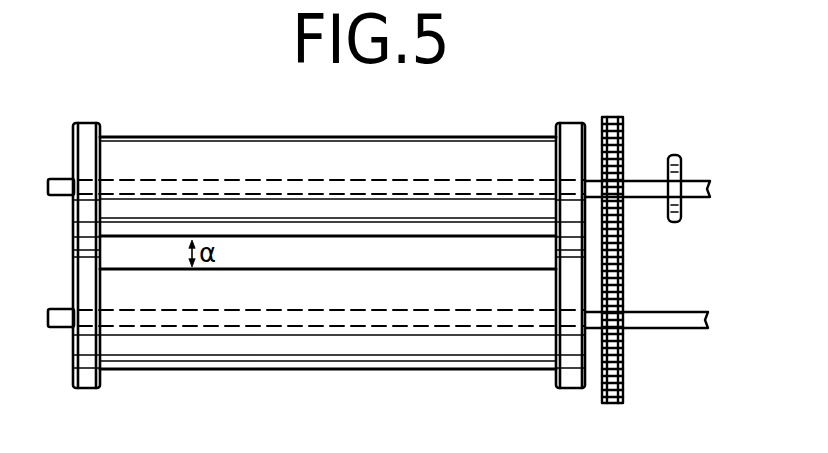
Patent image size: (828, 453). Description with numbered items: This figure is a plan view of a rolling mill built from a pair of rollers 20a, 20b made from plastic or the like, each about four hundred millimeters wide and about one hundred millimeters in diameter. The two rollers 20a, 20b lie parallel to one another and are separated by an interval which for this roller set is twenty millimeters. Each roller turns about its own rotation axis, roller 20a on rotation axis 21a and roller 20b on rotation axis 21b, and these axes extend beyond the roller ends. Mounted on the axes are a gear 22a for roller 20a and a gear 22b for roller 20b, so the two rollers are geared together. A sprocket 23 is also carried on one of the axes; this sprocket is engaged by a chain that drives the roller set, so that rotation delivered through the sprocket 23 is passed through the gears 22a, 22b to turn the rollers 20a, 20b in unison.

The roller 20a is at (352, 132).
The roller 20b is at (377, 380).
The rotation axis 21a is at (700, 197).
The rotation axis 21b is at (678, 318).
The gear 22a is at (610, 117).
The gear 22b is at (600, 400).
The sprocket 23 is at (676, 155).